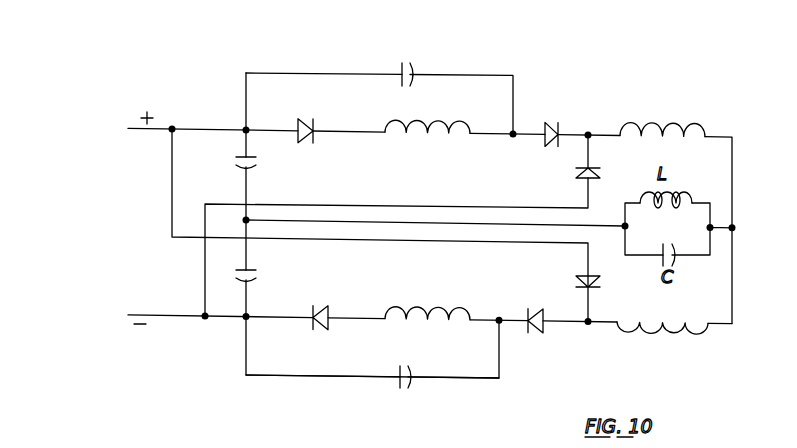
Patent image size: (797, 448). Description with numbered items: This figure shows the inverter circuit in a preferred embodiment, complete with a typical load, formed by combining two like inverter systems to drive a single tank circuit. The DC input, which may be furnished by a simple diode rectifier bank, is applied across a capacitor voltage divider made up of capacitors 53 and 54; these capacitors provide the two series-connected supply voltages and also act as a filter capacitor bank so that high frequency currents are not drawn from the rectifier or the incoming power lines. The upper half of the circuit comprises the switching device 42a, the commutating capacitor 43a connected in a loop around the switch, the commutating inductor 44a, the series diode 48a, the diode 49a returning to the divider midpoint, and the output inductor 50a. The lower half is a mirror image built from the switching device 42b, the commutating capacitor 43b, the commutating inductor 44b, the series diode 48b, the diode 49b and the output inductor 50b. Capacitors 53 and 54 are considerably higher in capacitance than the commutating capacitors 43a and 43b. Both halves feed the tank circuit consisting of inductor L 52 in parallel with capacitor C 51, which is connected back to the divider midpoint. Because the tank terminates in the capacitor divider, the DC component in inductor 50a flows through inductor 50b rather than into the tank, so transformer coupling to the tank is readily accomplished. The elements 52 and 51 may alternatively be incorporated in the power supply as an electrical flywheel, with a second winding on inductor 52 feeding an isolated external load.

The controlled rectifier 42a is at (303, 120).
The commutating capacitor 43a is at (401, 66).
The commutating inductor 44a is at (446, 121).
The series diode 48a is at (550, 126).
The feedback diode 49a is at (583, 168).
The inductor 50a is at (692, 125).
The capacitor C 51 is at (691, 192).
The inductor L 52 is at (676, 250).
The capacitor 53 is at (258, 157).
The capacitor 54 is at (253, 270).
The controlled rectifier 42b is at (326, 310).
The commutating capacitor 43b is at (411, 385).
The commutating inductor 44b is at (429, 306).
The series diode 48b is at (523, 312).
The feedback diode 49b is at (592, 284).
The inductor 50b is at (669, 334).